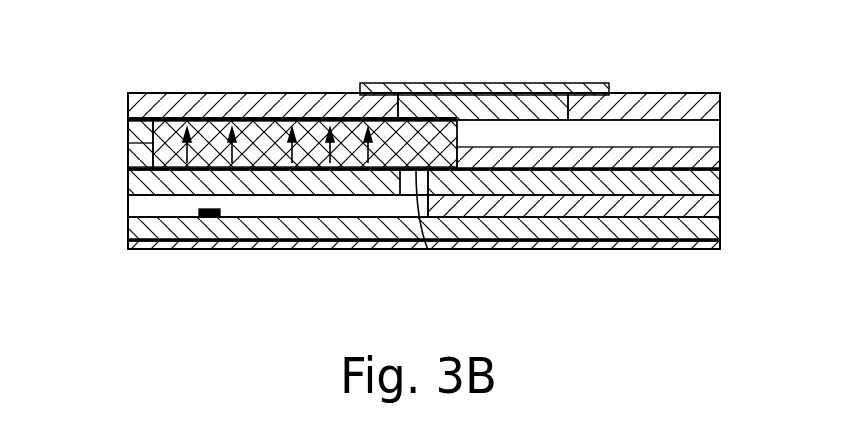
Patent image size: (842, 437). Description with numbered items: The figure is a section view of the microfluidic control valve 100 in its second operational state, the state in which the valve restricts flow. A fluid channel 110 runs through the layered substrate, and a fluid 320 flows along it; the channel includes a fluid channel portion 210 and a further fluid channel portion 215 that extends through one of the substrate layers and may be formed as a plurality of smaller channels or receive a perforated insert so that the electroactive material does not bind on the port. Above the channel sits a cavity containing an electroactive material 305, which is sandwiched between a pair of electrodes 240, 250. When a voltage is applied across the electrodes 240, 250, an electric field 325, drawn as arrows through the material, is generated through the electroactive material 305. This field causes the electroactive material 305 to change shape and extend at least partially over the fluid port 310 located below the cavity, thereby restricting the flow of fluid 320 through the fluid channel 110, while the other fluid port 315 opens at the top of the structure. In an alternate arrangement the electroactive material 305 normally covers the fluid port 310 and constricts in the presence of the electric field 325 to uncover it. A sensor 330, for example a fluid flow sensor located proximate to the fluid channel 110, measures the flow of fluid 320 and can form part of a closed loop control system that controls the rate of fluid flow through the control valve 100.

The control valve 100 is at (657, 70).
The fluid channel 110 is at (137, 203).
The fluid channel portion 210 is at (363, 207).
The fluid channel portion 215 is at (409, 183).
The electrode 240 is at (128, 168).
The electrode 250 is at (128, 118).
The electroactive material 305 is at (273, 128).
The fluid port 310 is at (428, 250).
The fluid port 315 is at (456, 127).
The fluid 320 is at (163, 205).
The electric field 325 is at (233, 156).
The sensor 330 is at (212, 217).